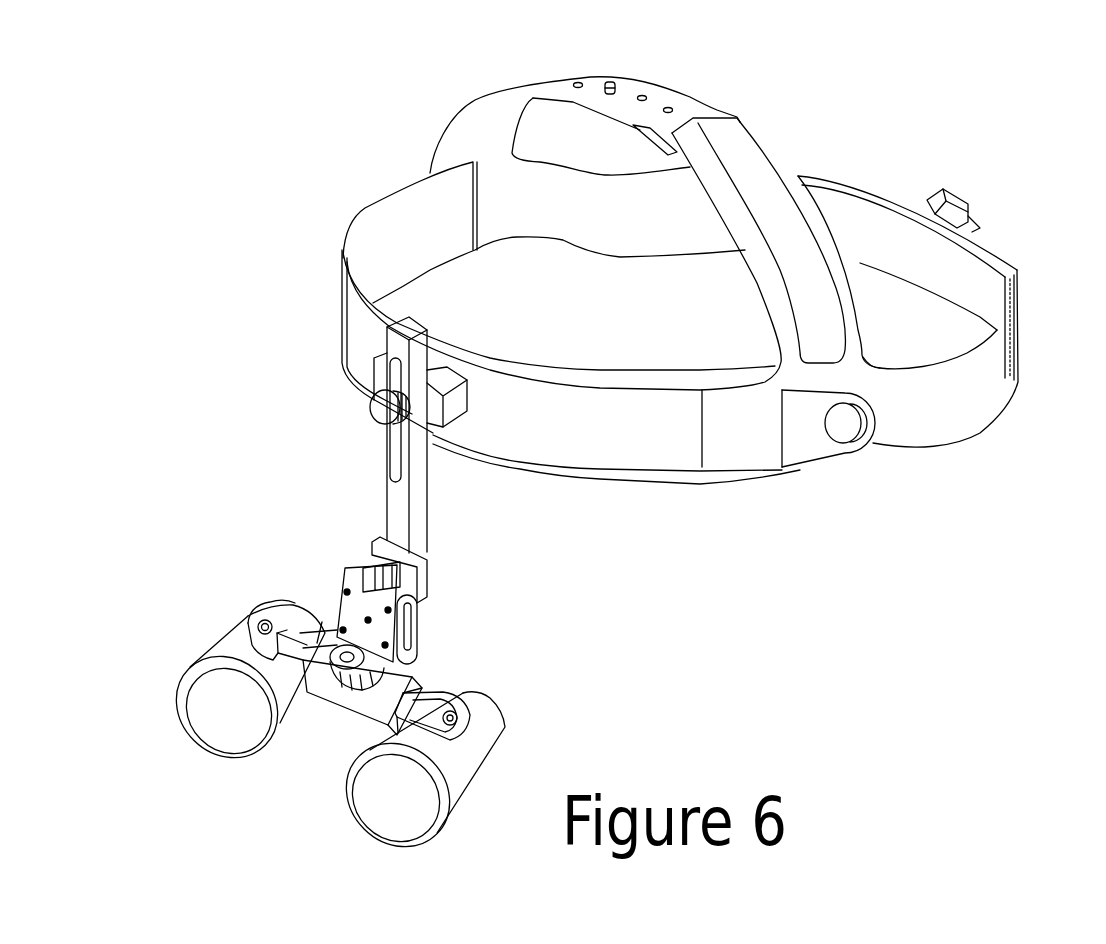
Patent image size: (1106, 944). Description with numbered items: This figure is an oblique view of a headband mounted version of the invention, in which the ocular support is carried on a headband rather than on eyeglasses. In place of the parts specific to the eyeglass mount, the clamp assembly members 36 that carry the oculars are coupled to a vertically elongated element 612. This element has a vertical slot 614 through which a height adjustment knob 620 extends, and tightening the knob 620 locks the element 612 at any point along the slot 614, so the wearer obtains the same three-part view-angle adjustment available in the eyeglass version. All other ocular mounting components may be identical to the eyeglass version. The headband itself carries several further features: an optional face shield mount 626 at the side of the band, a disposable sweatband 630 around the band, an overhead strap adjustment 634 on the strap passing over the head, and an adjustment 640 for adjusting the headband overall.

The disposable sweatband 630 is at (364, 218).
The overhead strap adjustment 634 is at (687, 103).
The adjustment 640 is at (963, 200).
The height adjustment knob 620 is at (377, 405).
The vertical slot 614 is at (397, 450).
The vertically elongated element 612 is at (415, 485).
The face shield mount 626 is at (873, 432).
The clamp assembly members 36 is at (423, 643).